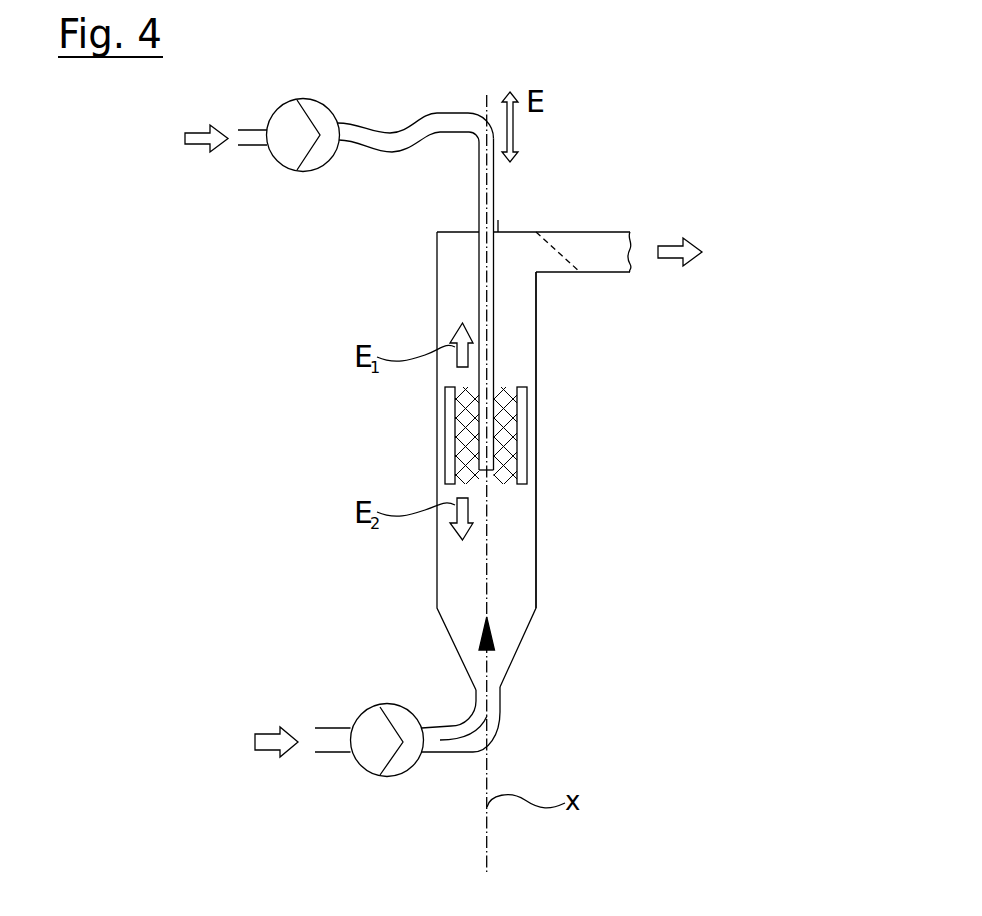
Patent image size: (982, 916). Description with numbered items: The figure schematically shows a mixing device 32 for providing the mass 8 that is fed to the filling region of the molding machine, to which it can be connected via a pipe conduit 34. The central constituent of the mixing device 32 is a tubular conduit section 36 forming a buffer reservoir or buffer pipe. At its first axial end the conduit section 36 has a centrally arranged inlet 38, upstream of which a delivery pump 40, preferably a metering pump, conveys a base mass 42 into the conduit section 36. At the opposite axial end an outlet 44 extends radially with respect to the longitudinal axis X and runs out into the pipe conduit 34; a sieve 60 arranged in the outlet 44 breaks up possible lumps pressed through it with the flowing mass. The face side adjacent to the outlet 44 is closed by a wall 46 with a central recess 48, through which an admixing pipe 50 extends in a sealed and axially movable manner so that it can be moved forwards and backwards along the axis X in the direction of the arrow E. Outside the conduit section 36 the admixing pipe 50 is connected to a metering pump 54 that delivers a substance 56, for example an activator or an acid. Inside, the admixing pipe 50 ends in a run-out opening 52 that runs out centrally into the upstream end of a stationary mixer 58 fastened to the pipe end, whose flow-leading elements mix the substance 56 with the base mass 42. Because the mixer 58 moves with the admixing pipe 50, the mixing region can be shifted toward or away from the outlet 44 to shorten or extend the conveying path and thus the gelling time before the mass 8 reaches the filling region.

The mass 8 is at (690, 243).
The mixing device 32 is at (362, 403).
The pipe conduit 34 is at (608, 275).
The conduit section 36 is at (522, 583).
The inlet 38 is at (503, 664).
The delivery pump 40 is at (407, 765).
The base mass 42 is at (283, 753).
The outlet 44 is at (528, 243).
The wall 46 is at (447, 229).
The recess 48 is at (473, 232).
The admixing pipe 50 is at (483, 270).
The run-out opening 52 is at (487, 470).
The metering pump 54 is at (313, 158).
The substance 56 is at (197, 143).
The stationary mixer 58 is at (513, 426).
The sieve 60 is at (567, 262).